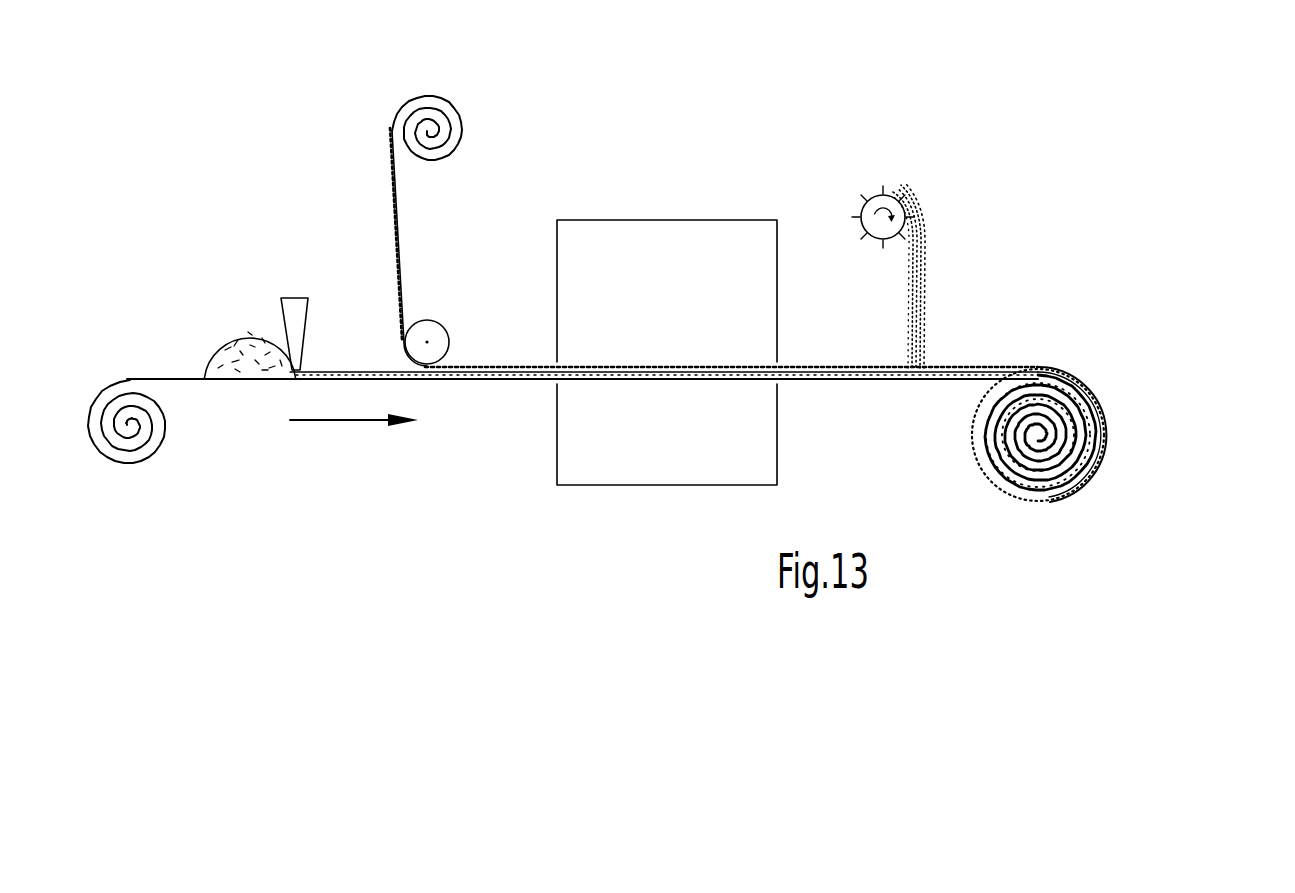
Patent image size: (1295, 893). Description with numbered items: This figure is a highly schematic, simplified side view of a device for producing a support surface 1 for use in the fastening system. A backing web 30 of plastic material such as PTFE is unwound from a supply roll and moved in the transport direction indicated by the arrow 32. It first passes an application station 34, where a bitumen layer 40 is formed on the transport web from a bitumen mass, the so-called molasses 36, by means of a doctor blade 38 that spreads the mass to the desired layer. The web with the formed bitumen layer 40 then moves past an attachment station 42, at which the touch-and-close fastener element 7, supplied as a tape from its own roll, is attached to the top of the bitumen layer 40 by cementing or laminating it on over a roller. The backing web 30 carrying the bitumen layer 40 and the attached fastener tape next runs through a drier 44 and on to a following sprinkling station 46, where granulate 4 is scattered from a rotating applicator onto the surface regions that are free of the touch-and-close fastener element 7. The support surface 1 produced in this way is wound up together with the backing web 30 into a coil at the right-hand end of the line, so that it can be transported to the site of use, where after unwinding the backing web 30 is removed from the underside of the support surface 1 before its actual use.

The support surface 1 is at (1106, 403).
The granulate 4 is at (918, 293).
The touch-and-close fastener element 7 is at (392, 220).
The backing web 30 is at (178, 378).
The arrow 32 is at (337, 420).
The application station 34 is at (244, 195).
The molasses 36 is at (243, 325).
The doctor blade 38 is at (295, 305).
The bitumen layer 40 is at (336, 368).
The attachment station 42 is at (486, 255).
The drier 44 is at (670, 262).
The sprinkling station 46 is at (938, 160).